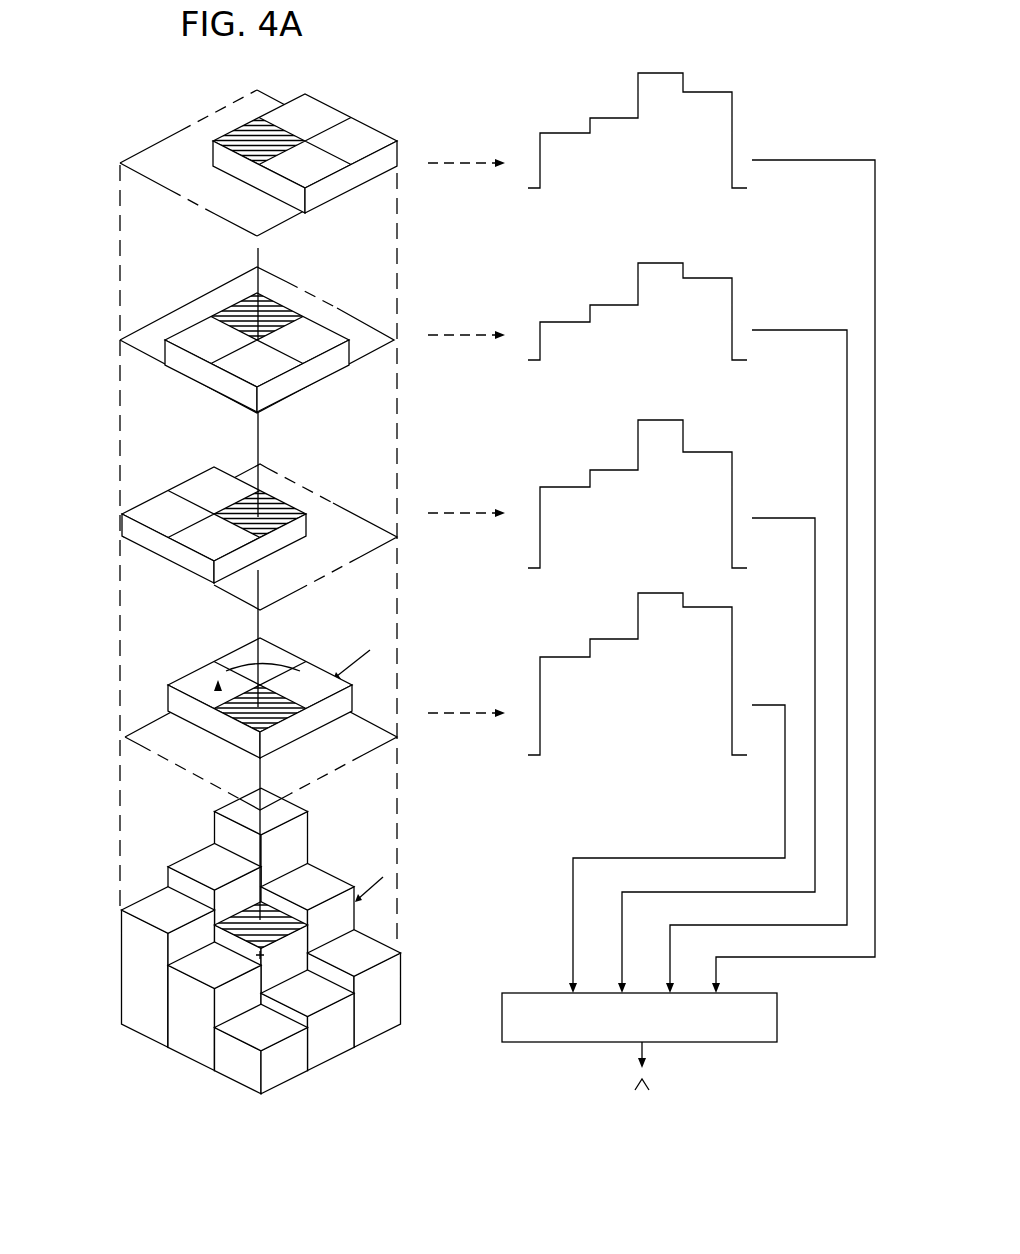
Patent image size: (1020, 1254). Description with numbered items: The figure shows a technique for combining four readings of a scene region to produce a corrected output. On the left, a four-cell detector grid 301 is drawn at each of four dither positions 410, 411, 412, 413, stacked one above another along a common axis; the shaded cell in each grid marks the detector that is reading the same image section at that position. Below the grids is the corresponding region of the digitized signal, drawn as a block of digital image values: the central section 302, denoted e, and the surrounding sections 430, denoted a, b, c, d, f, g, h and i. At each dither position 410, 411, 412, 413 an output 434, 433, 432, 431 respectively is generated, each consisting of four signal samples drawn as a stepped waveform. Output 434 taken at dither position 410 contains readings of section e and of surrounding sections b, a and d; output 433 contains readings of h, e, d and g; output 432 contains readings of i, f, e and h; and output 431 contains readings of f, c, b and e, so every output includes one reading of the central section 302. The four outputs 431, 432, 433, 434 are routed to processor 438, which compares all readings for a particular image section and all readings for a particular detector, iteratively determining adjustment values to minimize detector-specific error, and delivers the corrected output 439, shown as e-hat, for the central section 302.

The detector grid block 301 is at (337, 108).
The section 302 is at (303, 944).
The dither position 410 is at (97, 692).
The dither position 411 is at (97, 512).
The dither position 412 is at (97, 335).
The dither position 413 is at (97, 184).
The surrounding sections 430 is at (267, 942).
The output 431 is at (732, 122).
The output 432 is at (732, 300).
The output 433 is at (732, 490).
The output 434 is at (732, 652).
The processor 438 is at (777, 1023).
The corrected output 439 is at (672, 1097).